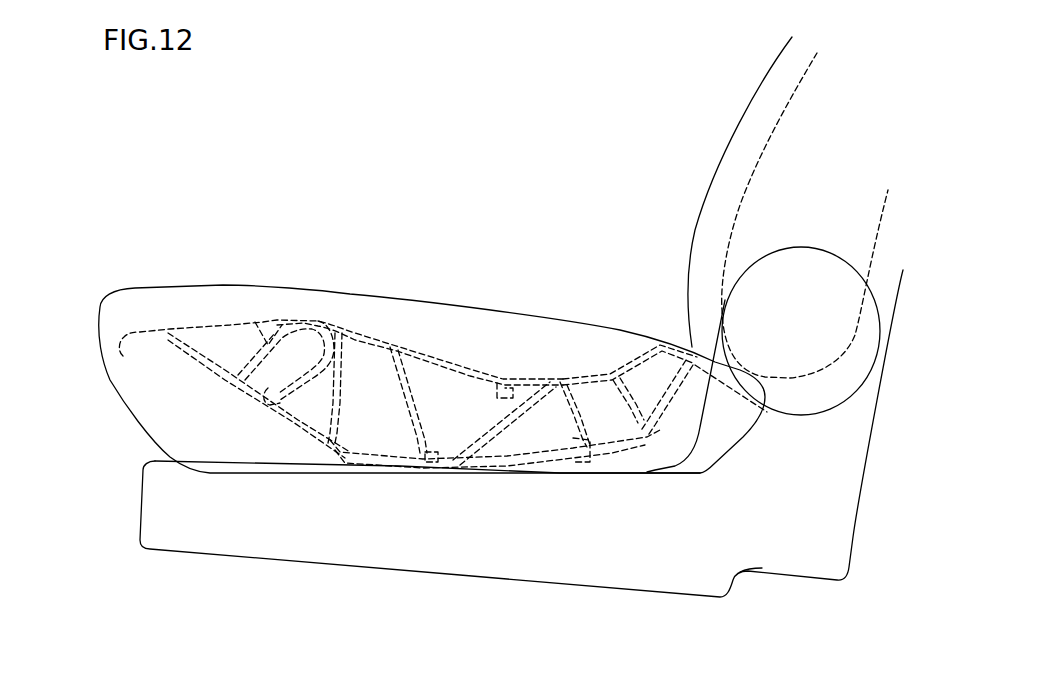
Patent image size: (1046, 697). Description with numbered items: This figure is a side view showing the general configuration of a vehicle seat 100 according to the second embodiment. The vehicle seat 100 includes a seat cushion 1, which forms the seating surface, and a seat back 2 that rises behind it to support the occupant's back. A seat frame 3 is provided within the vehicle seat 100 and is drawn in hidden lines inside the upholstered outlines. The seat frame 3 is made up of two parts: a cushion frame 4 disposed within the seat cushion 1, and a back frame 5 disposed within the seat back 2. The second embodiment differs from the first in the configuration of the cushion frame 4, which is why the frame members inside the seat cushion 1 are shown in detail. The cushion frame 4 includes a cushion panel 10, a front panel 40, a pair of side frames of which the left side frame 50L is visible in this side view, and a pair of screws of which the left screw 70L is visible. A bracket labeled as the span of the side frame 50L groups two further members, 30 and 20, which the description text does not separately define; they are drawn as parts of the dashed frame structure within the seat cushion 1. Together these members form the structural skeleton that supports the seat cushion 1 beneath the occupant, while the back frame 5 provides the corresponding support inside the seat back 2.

The vehicle seat 100 is at (357, 127).
The seat cushion 1 is at (236, 287).
The seat back 2 is at (742, 118).
The seat frame 3 is at (618, 196).
The cushion frame 4 is at (600, 365).
The back frame 5 is at (733, 248).
The side frame 50L is at (406, 340).
The front frame member 30 is at (395, 347).
The rear frame member 20 is at (571, 343).
The front panel 40 is at (220, 375).
The screw 70L is at (431, 462).
The cushion panel 10 is at (580, 457).